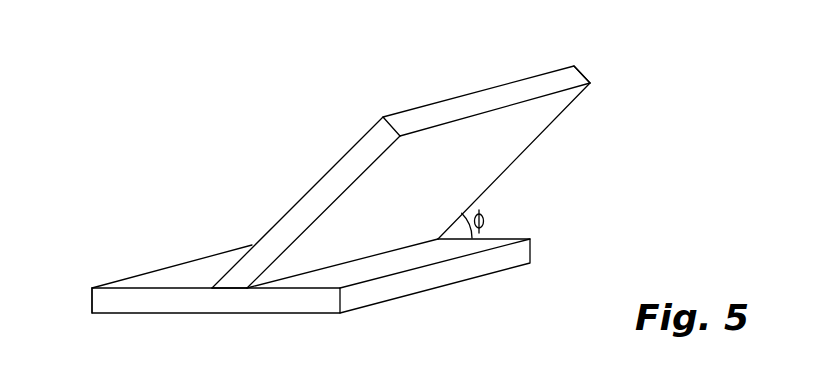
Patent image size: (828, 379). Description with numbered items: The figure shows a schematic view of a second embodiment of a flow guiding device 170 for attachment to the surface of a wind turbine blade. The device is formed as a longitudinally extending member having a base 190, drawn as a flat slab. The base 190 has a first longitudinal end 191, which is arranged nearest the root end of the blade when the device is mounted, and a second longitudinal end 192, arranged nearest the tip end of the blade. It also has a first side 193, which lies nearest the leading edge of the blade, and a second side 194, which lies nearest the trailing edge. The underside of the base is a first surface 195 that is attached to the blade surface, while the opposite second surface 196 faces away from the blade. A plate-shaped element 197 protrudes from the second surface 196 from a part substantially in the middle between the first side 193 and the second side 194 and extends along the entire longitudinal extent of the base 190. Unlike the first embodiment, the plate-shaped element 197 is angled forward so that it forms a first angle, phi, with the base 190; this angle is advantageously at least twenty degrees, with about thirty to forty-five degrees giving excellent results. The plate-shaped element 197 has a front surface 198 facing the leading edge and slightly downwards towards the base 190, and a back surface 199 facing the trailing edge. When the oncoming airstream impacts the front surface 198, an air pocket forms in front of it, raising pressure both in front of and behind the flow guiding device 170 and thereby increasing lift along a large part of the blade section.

The flow guiding device 170 is at (443, 159).
The base 190 is at (314, 285).
The first longitudinal end 191 is at (245, 305).
The second longitudinal end 192 is at (488, 238).
The first side 193 is at (396, 291).
The second side 194 is at (92, 300).
The first surface 195 is at (168, 313).
The second surface 196 is at (157, 278).
The plate-shaped element 197 is at (593, 79).
The front surface 198 is at (557, 113).
The back surface 199 is at (321, 179).